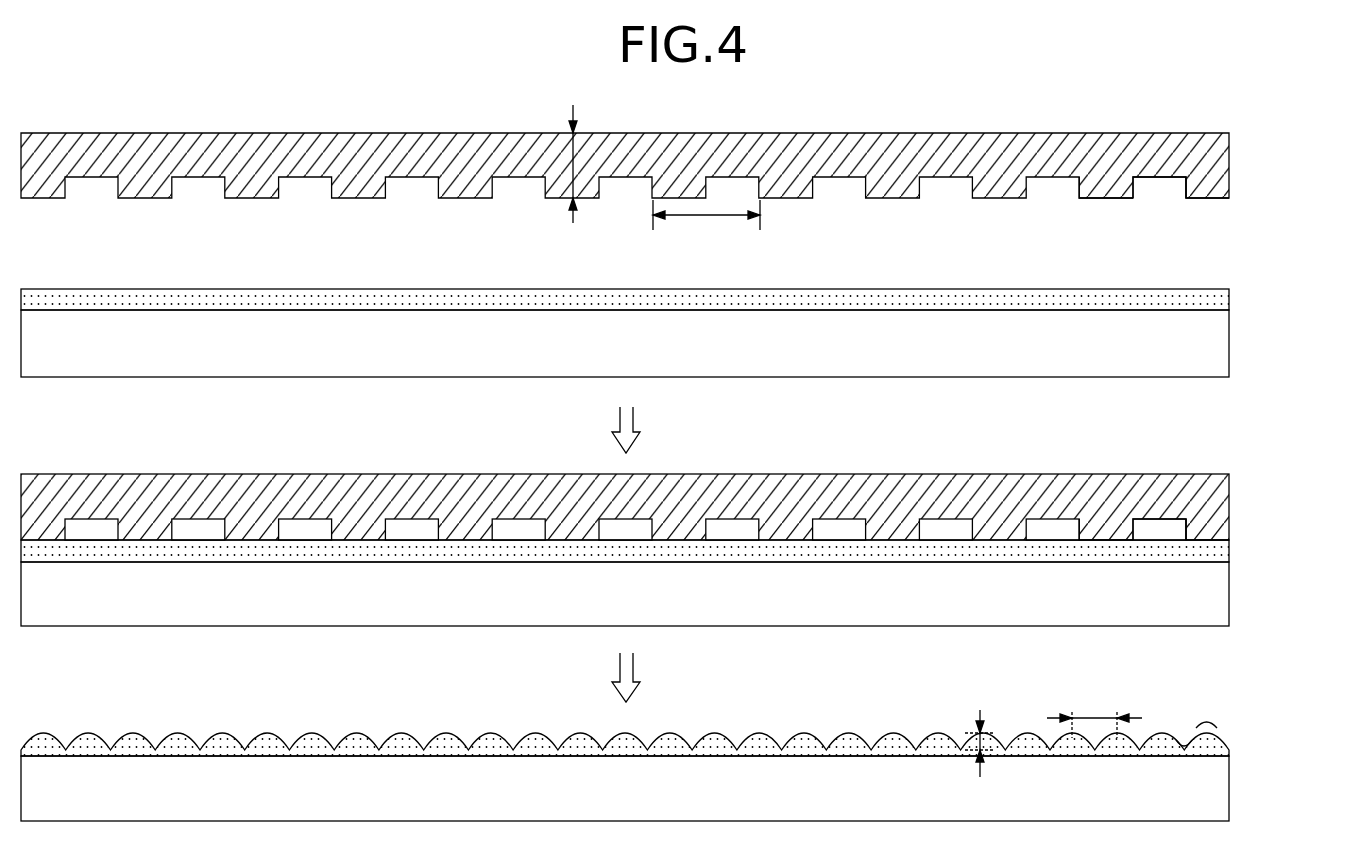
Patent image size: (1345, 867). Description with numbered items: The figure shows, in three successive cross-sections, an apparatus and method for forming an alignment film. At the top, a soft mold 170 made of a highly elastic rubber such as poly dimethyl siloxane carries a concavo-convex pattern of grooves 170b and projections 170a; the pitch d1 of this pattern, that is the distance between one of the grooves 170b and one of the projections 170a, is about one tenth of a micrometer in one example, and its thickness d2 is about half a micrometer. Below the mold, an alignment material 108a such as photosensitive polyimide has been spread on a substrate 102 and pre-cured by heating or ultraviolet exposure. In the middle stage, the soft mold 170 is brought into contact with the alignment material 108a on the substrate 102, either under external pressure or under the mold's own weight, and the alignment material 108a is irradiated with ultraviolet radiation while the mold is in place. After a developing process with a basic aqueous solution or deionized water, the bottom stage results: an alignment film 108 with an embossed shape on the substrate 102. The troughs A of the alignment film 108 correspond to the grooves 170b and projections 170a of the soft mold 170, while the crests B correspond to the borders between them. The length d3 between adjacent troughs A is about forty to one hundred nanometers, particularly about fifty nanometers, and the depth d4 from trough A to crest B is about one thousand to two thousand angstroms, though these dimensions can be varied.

The soft mold 170 is at (1265, 168).
The projections 170a is at (1213, 183).
The grooves 170b is at (1166, 172).
The alignment material 108a is at (1230, 297).
The alignment film 108 is at (1230, 745).
The substrate 102 is at (1230, 341).
The pitch of the concavo-convex pattern d1 is at (706, 225).
The thickness of the concavo-convex pattern d2 is at (575, 162).
The length between adjacent troughs d3 is at (1094, 715).
The depth from trough to crest d4 is at (966, 741).
The troughs A is at (1184, 749).
The crests B is at (1207, 733).